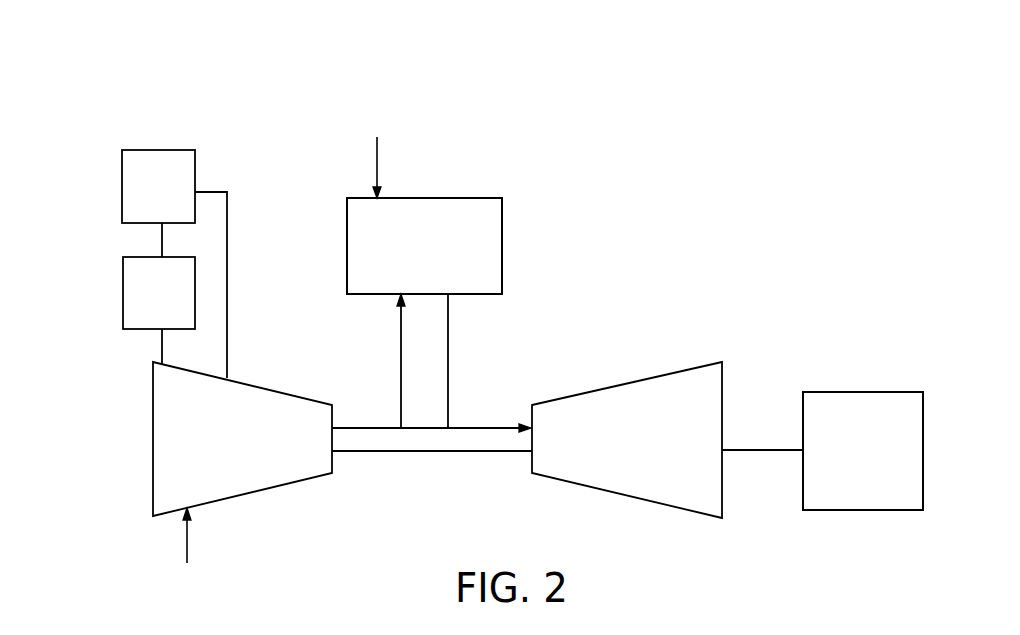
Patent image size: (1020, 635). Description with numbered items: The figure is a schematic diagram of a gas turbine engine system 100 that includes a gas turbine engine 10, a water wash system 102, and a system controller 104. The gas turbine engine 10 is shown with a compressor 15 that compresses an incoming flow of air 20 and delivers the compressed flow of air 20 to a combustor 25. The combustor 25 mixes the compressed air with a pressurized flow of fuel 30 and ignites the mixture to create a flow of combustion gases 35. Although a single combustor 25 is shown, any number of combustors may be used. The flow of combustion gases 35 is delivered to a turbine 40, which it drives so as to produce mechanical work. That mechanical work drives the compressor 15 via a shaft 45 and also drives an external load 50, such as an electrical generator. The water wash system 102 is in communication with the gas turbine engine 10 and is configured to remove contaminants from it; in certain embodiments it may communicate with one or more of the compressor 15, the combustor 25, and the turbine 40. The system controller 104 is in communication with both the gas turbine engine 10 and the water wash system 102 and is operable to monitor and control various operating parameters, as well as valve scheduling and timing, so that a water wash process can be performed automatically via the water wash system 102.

The gas turbine engine 10 is at (631, 246).
The compressor 15 is at (230, 450).
The flow of air 20 is at (187, 540).
The combustor 25 is at (413, 256).
The flow of fuel 30 is at (377, 150).
The flow of combustion gases 35 is at (470, 427).
The turbine 40 is at (610, 448).
The shaft 45 is at (753, 450).
The external load 50 is at (850, 462).
The gas turbine engine system 100 is at (165, 93).
The water wash system 102 is at (142, 304).
The system controller 104 is at (142, 196).